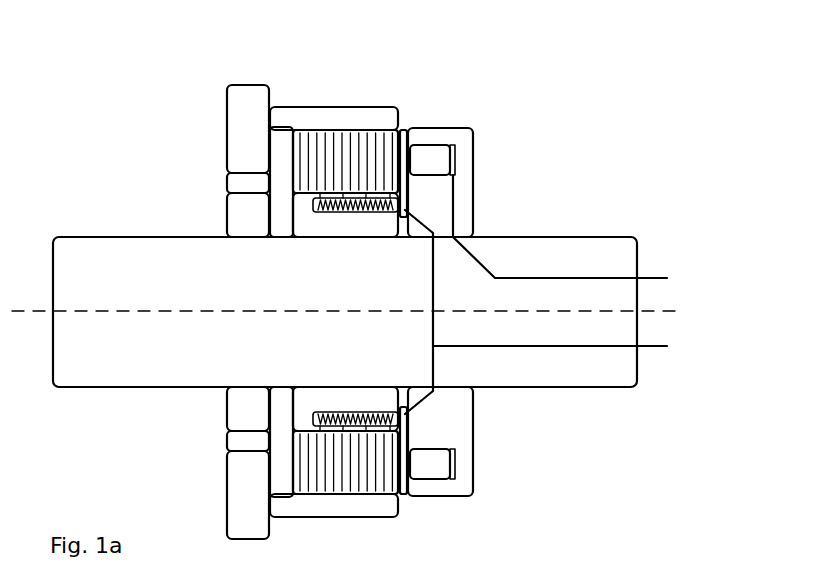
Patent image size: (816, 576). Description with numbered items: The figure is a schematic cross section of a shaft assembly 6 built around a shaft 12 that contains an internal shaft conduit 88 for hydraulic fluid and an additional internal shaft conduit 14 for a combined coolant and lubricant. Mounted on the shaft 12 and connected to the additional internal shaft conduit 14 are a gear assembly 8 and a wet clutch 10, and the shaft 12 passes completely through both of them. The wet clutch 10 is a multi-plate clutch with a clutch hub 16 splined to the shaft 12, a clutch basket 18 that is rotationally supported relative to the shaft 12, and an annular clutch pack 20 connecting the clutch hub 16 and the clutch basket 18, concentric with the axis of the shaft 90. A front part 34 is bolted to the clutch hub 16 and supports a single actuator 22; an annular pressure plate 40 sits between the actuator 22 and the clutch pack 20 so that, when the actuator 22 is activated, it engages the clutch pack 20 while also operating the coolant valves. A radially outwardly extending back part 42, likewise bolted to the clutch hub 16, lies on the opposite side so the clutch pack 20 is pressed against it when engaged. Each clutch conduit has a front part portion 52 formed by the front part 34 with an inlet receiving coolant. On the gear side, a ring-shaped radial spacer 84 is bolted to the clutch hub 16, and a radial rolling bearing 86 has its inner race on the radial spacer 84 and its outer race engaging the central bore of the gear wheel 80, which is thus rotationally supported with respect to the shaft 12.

The shaft assembly 6 is at (100, 66).
The gear assembly 8 is at (280, 65).
The wet clutch 10 is at (372, 102).
The shaft 12 is at (588, 248).
The additional internal shaft conduit 14 is at (536, 348).
The clutch hub 16 is at (308, 225).
The clutch basket 18 is at (272, 118).
The clutch pack 20 is at (310, 168).
The actuator 22 is at (462, 155).
The front part 34 is at (474, 187).
The pressure plate 40 is at (402, 128).
The back part 42 is at (270, 157).
The front part portion 52 is at (420, 410).
The gear wheel 80 is at (247, 482).
The radial spacer 84 is at (247, 411).
The radial rolling bearing 86 is at (247, 445).
The internal shaft conduit 88 is at (536, 278).
The axis of the shaft 90 is at (667, 310).